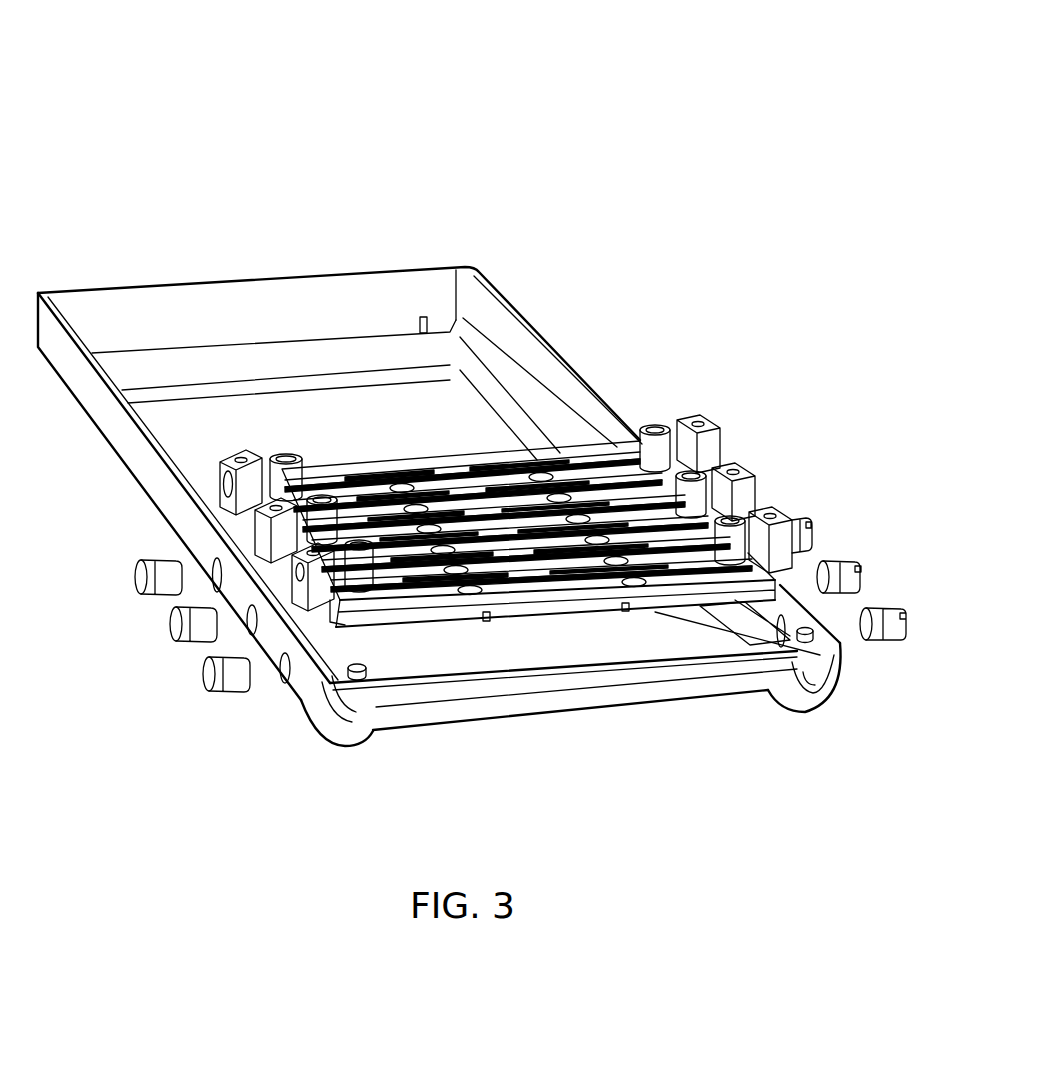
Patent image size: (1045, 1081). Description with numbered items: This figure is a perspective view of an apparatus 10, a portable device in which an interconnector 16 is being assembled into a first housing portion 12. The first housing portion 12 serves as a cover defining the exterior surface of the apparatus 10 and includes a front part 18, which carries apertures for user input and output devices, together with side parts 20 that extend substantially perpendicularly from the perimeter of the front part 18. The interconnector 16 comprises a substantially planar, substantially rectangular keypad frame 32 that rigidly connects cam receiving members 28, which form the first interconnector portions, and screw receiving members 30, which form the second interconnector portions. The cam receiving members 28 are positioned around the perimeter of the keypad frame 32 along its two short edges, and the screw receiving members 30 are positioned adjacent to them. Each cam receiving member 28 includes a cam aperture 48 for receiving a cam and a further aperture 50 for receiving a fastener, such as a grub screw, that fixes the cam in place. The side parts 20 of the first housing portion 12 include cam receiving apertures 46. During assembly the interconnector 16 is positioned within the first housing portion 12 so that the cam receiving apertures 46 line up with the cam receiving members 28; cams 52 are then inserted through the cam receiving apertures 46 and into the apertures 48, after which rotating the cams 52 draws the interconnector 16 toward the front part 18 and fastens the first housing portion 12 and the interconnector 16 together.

The apparatus 10 is at (573, 97).
The first housing portion 12 is at (493, 727).
The interconnector 16 is at (444, 522).
The front part 18 is at (302, 443).
The side parts 20 is at (250, 297).
The cam receiving members 28 is at (233, 452).
The screw receiving members 30 is at (652, 428).
The keypad frame 32 is at (452, 467).
The cam receiving apertures 46 is at (285, 683).
The cam aperture 48 is at (228, 484).
The fastener aperture 50 is at (440, 607).
The cams 52 is at (205, 683).